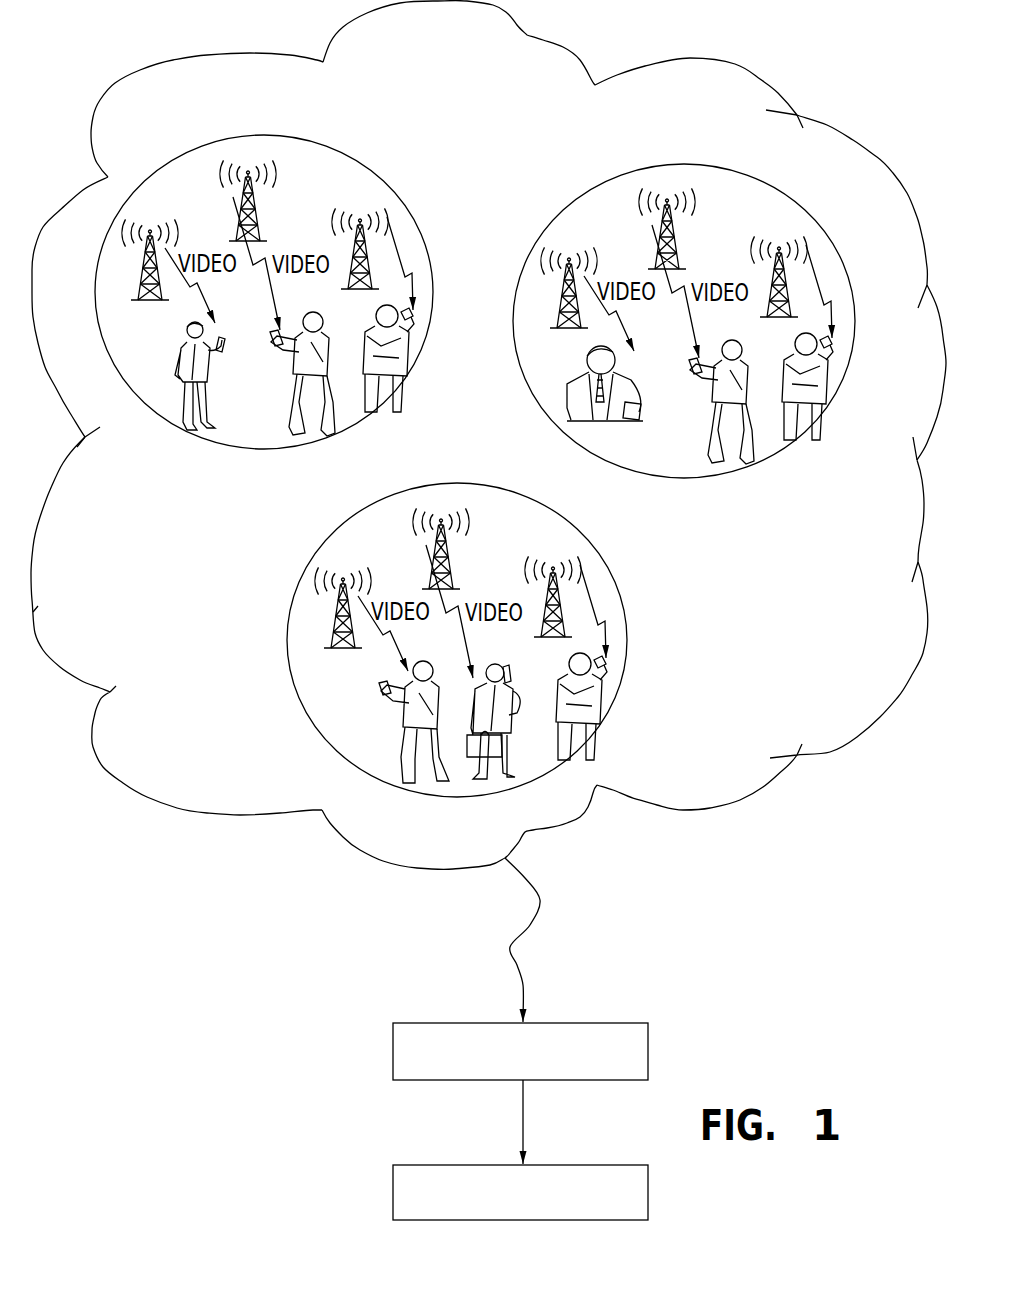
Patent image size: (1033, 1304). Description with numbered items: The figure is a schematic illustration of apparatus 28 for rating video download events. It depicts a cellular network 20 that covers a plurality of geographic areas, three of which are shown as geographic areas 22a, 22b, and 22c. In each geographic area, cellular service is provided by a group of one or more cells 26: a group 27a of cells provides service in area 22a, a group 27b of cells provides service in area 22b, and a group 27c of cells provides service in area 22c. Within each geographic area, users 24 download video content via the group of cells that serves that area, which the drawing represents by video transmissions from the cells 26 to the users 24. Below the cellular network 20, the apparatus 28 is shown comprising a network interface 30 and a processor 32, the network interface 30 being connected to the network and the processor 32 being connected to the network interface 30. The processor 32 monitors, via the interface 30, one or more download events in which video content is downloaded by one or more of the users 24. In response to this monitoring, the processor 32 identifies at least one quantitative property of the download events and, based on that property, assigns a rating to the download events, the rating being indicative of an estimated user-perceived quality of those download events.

The cellular network 20 is at (766, 76).
The geographic area 22a is at (417, 216).
The geographic area 22b is at (832, 242).
The geographic area 22c is at (605, 556).
The users 24 is at (297, 387).
The cells 26 is at (256, 187).
The group of cells 27a is at (342, 196).
The group of cells 27b is at (763, 222).
The group of cells 27c is at (533, 541).
The apparatus 28 is at (458, 1039).
The network interface 30 is at (393, 1047).
The processor 32 is at (393, 1190).